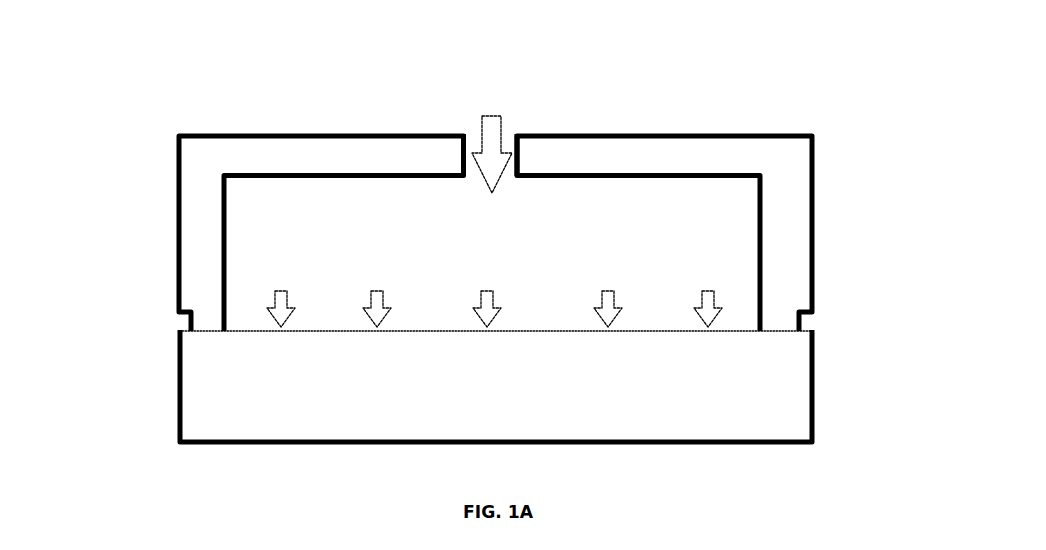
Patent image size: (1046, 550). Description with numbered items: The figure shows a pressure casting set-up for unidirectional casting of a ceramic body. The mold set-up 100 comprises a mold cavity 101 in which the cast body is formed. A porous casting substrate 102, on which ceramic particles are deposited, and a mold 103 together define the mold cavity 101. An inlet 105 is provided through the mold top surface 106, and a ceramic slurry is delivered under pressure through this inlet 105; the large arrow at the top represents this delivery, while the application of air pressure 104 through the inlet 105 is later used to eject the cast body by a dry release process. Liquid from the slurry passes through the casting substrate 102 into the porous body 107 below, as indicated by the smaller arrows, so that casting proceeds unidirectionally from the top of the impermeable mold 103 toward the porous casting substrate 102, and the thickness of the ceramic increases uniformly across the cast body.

The mold set-up 100 is at (329, 113).
The mold cavity 101 is at (280, 245).
The porous casting substrate 102 is at (330, 330).
The mold 103 is at (753, 148).
The air pressure 104 is at (497, 112).
The inlet 105 is at (477, 130).
The mold top surface 106 is at (607, 178).
The porous body 107 is at (750, 390).